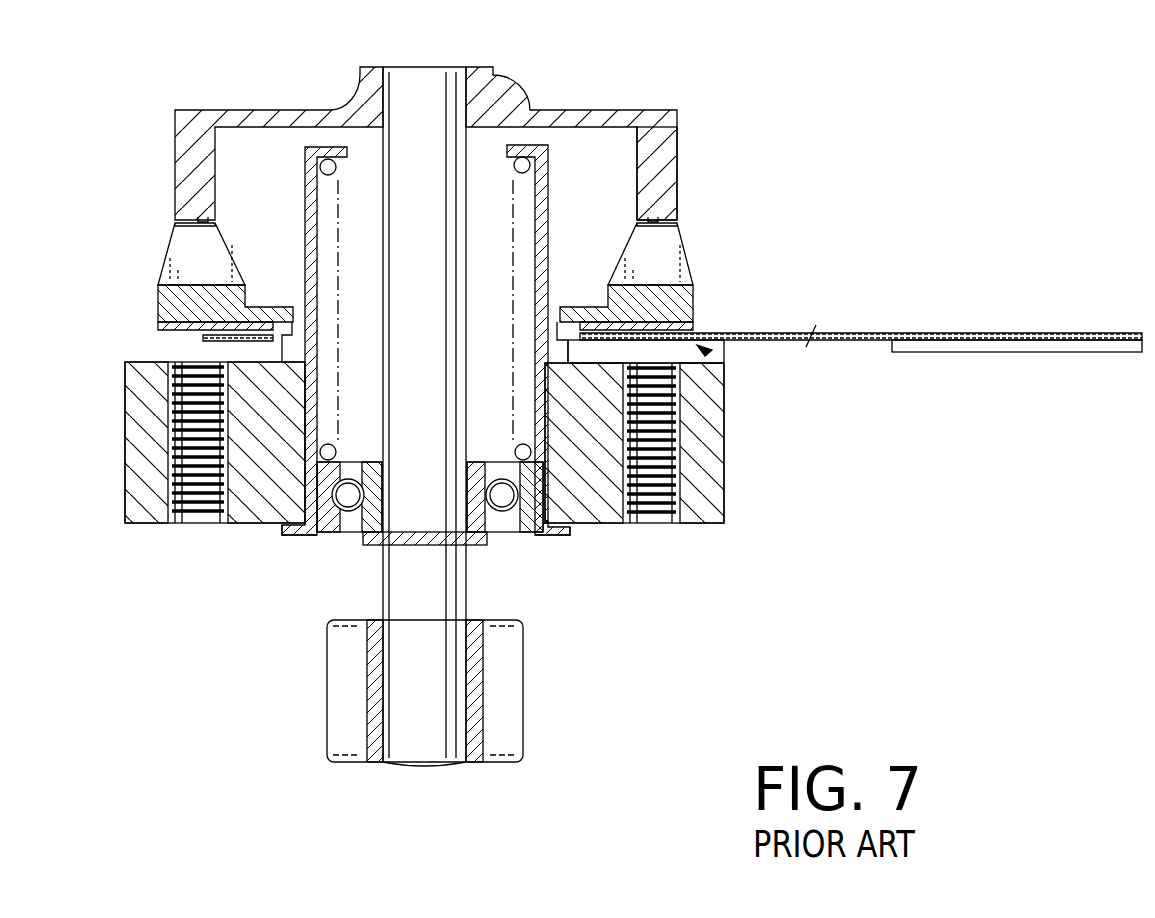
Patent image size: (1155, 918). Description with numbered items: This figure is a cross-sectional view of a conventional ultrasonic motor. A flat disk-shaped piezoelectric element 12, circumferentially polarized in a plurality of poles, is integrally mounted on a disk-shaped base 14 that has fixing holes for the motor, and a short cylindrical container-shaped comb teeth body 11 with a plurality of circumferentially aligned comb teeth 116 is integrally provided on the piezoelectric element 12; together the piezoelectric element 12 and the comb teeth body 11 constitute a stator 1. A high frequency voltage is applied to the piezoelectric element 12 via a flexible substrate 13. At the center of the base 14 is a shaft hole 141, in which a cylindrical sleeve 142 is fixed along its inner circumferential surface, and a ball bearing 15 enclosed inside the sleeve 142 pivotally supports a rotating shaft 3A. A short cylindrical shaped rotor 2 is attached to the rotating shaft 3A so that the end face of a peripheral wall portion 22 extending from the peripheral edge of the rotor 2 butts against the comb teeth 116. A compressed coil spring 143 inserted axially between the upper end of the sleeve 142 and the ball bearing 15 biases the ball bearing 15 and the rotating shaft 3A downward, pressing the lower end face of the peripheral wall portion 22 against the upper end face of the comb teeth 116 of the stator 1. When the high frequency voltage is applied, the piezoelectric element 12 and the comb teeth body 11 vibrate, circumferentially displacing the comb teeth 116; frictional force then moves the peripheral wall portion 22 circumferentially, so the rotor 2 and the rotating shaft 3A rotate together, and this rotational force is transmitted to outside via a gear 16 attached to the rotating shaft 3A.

The stator 1 is at (704, 350).
The rotor 2 is at (590, 117).
The peripheral wall portion 22 is at (655, 192).
The rotating shaft 3A is at (424, 80).
The comb teeth body 11 is at (673, 298).
The piezoelectric element 12 is at (700, 328).
The flexible substrate 13 is at (858, 342).
The base 14 is at (602, 493).
The shaft hole 141 is at (310, 467).
The sleeve 142 is at (597, 197).
The compressed coil spring 143 is at (327, 178).
The ball bearing 15 is at (524, 532).
The gear 16 is at (510, 742).
The comb teeth 116 is at (667, 257).